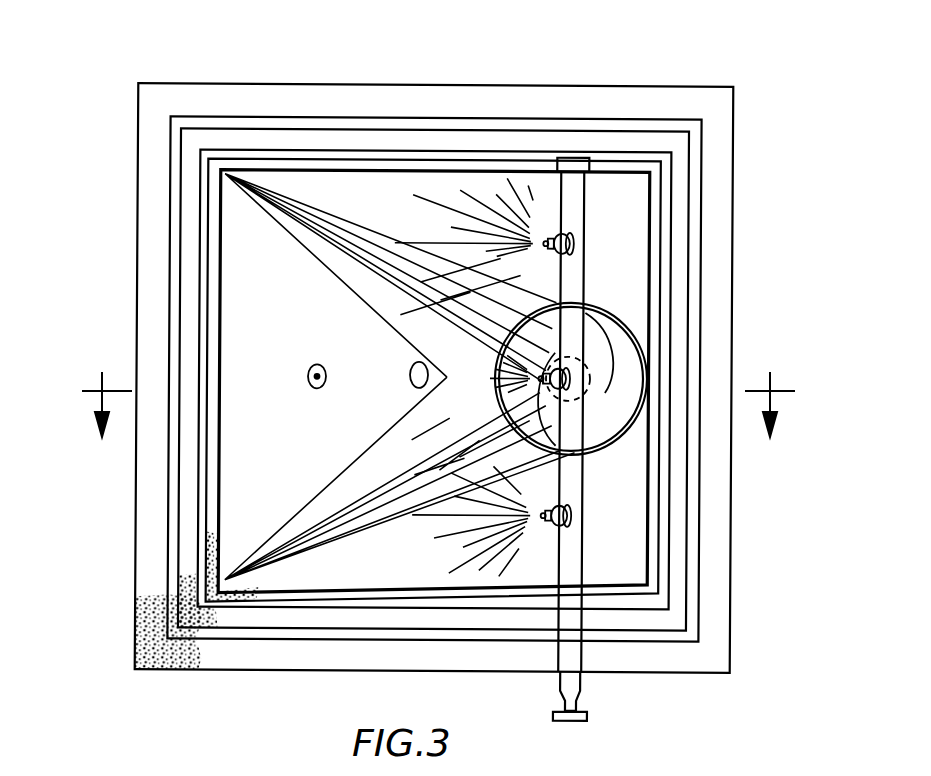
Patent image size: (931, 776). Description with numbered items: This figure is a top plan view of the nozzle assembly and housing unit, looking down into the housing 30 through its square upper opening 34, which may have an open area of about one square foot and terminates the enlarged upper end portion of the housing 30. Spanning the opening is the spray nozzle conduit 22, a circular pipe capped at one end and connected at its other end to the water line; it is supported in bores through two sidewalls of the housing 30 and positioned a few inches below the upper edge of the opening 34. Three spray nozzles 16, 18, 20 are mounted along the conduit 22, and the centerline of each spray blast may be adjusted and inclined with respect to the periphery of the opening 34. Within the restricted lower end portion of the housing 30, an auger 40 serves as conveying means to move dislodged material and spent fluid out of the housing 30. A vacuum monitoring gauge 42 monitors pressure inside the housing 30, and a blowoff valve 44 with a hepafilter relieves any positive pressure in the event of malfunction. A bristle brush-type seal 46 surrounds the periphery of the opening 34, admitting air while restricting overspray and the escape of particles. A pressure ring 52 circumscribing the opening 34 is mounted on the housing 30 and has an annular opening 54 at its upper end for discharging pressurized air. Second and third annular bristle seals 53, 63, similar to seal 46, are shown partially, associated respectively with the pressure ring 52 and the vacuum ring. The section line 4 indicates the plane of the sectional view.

The section line 4- 4 is at (438, 388).
The spray nozzle 16 is at (574, 244).
The spray nozzle 18 is at (576, 361).
The spray nozzle 20 is at (572, 508).
The spray nozzle conduit 22 is at (586, 559).
The housing 30 is at (652, 243).
The upper opening 34 is at (340, 178).
The auger 40 is at (612, 414).
The vacuum monitoring gauge 42 is at (409, 376).
The blowoff valve 44 is at (306, 376).
The bristle brush-type seal 46 is at (215, 553).
The pressure ring 52 is at (630, 140).
The second annular bristle seal 53 is at (183, 585).
The annular opening 54 is at (665, 175).
The third annular bristle seal 63 is at (148, 648).